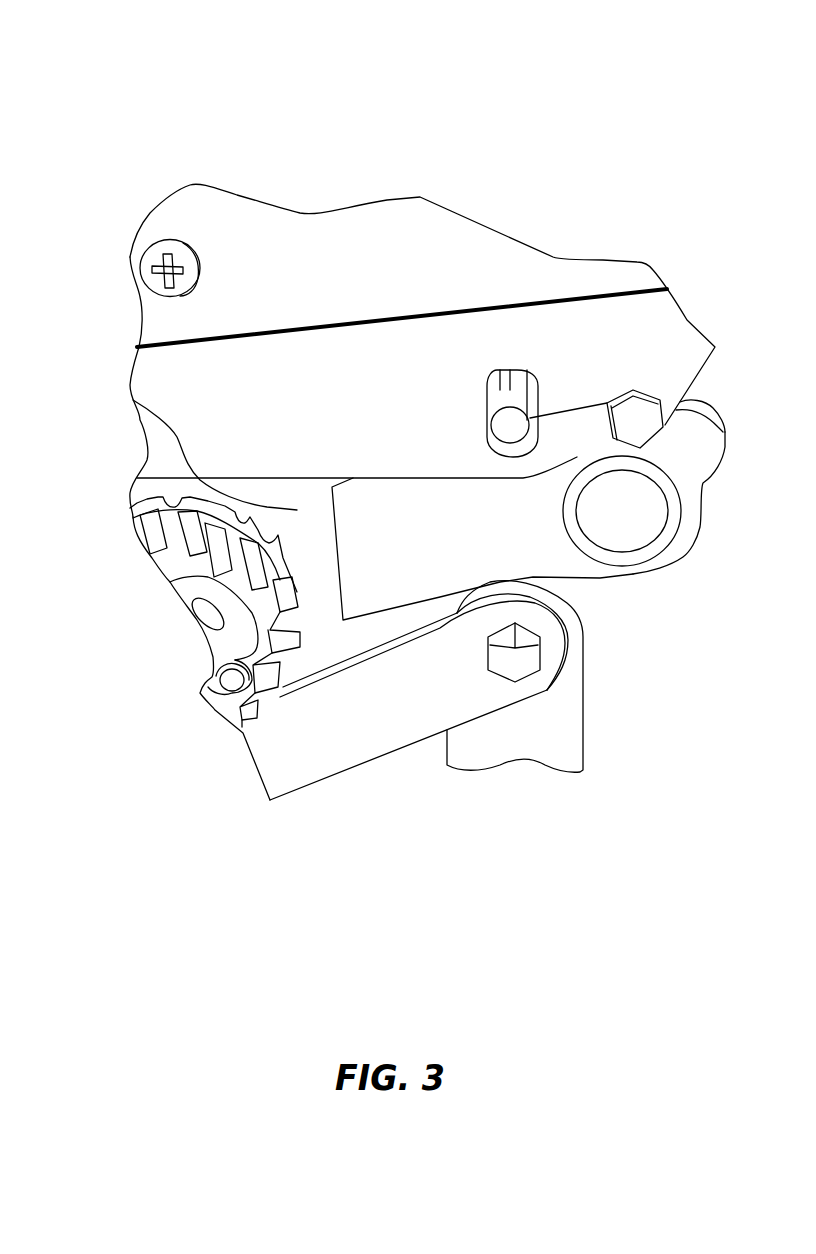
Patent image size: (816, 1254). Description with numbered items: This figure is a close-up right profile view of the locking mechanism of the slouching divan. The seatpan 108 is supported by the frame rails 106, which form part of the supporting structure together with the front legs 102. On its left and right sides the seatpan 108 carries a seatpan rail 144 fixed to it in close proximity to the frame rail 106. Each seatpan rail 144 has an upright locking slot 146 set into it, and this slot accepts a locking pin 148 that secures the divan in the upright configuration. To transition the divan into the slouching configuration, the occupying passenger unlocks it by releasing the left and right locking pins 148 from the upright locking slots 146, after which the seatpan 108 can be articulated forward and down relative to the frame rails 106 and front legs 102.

The seatpan 108 is at (102, 75).
The seatpan rail 144 is at (442, 222).
The upright locking slot 146 is at (501, 382).
The locking pin 148 is at (602, 398).
The frame rail 106 is at (133, 400).
The front leg 102 is at (560, 730).